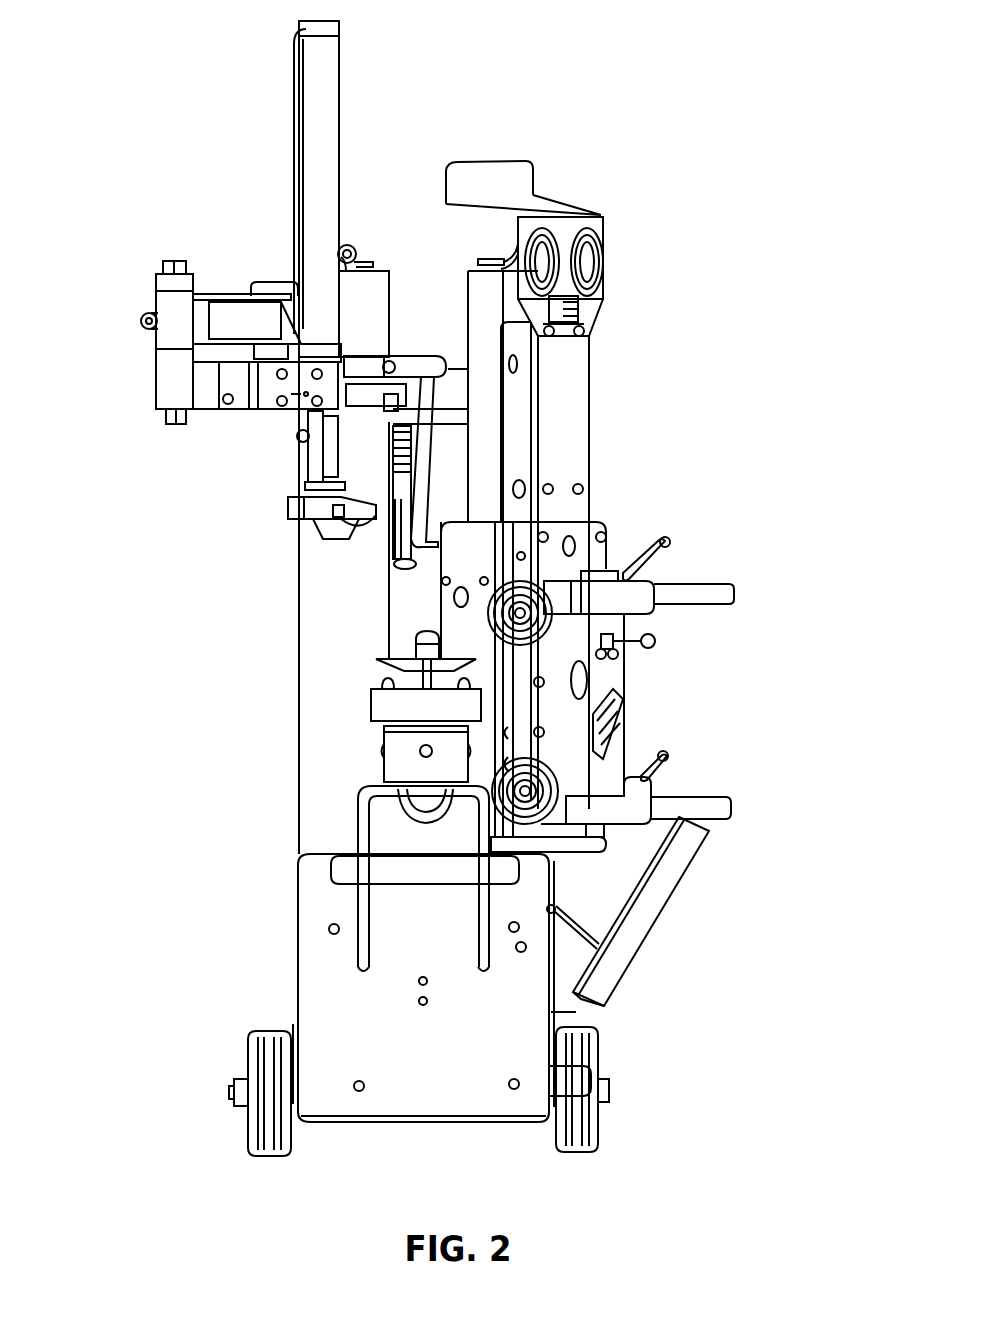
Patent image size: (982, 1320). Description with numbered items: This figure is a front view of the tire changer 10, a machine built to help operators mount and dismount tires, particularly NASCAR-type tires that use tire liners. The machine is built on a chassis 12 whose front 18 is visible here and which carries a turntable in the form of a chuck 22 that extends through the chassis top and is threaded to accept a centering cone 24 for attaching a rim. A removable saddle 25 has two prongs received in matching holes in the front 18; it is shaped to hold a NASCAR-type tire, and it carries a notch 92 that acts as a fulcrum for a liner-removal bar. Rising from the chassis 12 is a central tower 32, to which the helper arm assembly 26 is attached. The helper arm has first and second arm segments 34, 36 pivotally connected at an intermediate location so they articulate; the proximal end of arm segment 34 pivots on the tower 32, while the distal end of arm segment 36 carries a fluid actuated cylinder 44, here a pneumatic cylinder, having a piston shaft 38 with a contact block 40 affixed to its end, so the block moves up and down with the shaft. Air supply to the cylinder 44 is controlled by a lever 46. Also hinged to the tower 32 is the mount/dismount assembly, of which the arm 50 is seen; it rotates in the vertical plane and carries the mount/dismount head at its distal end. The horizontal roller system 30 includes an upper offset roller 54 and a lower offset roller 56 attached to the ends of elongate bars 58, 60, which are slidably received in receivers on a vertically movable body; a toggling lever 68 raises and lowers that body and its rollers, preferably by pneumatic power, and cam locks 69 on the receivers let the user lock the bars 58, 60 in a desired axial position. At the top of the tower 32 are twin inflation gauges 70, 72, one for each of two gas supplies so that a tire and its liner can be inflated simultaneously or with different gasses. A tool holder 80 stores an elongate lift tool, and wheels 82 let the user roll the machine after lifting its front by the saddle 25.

The tire changer 10 is at (780, 198).
The chassis 12 is at (437, 1123).
The front 18 is at (354, 1041).
The chuck 22 is at (370, 716).
The centering cone 24 is at (381, 662).
The removable saddle 25 is at (482, 968).
The helper arm assembly 26 is at (128, 380).
The horizontal roller system 30 is at (616, 512).
The central tower 32 is at (383, 232).
The first arm segment 34 is at (215, 295).
The second arm segment 36 is at (206, 410).
The piston shaft 38 is at (312, 462).
The contact block 40 is at (287, 512).
The fluid actuated cylinder 44 is at (338, 75).
The lever 46 is at (296, 437).
The arm 50 is at (433, 460).
The upper offset roller 54 is at (618, 656).
The lower offset roller 56 is at (560, 783).
The elongate bar 58 is at (720, 583).
The elongate bar 60 is at (728, 797).
The toggling lever 68 is at (655, 642).
The cam locks 69 is at (666, 539).
The inflation gauge 70 is at (548, 228).
The inflation gauge 72 is at (602, 243).
The tool holder 80 is at (650, 946).
The wheels 82 is at (265, 1157).
The notch 92 is at (417, 830).